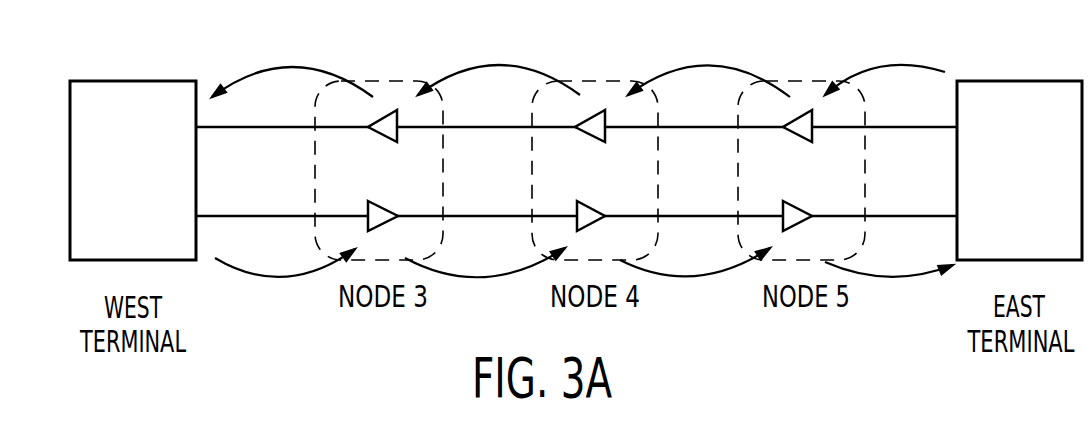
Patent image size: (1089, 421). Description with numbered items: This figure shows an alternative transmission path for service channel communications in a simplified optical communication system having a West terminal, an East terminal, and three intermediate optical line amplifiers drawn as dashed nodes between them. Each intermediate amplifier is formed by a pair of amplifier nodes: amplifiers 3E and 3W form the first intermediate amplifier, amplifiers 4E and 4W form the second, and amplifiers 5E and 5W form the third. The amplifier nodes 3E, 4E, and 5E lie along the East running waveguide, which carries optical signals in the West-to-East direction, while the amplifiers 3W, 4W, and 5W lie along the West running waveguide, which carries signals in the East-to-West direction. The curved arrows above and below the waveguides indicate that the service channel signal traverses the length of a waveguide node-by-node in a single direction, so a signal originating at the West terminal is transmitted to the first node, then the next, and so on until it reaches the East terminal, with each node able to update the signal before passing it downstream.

The amplifier 3W is at (383, 143).
The amplifier node 3E is at (387, 231).
The amplifier 4W is at (591, 143).
The amplifier node 4E is at (595, 231).
The amplifier 5W is at (799, 143).
The amplifier node 5E is at (801, 231).